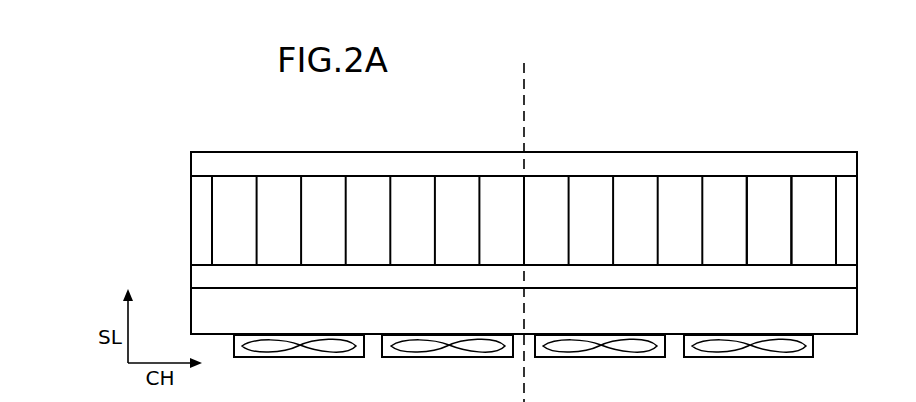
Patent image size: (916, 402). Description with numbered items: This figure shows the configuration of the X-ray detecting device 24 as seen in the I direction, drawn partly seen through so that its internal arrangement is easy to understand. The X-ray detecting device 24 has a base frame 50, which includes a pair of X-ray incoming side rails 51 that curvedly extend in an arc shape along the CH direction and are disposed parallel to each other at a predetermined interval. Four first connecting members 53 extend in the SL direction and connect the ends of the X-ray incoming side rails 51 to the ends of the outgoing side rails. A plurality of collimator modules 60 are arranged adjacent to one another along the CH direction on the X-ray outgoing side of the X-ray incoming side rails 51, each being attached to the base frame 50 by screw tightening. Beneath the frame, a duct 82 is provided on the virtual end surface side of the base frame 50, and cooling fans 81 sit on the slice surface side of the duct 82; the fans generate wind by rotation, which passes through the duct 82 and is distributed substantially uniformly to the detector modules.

The X-ray detecting device 24 is at (651, 134).
The base frame 50 is at (855, 139).
The X-ray incoming side rails 51 is at (848, 161).
The first connecting members 53 is at (199, 220).
The collimator modules 60 is at (765, 187).
The cooling fans 81 is at (249, 358).
The duct 82 is at (848, 312).